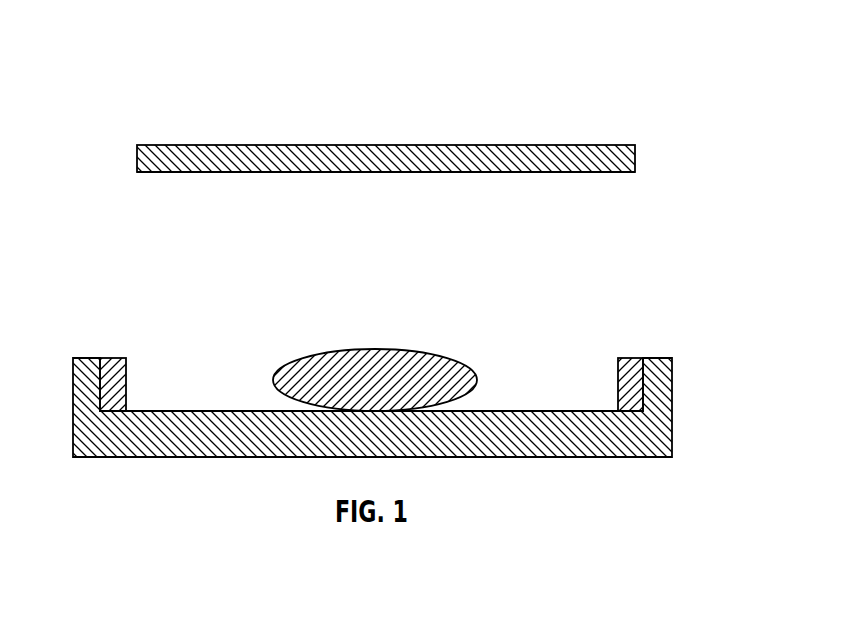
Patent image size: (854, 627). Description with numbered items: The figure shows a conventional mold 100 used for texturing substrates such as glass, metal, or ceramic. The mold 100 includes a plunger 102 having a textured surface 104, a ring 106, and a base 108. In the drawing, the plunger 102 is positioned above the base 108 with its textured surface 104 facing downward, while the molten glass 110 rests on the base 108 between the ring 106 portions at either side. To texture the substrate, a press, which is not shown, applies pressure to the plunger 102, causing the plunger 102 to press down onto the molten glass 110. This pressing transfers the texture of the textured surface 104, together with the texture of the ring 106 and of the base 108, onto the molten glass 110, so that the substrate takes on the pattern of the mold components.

The mold 100 is at (120, 66).
The plunger 102 is at (515, 145).
The textured surface 104 is at (623, 172).
The ring 106 is at (630, 358).
The base 108 is at (672, 410).
The molten glass 110 is at (375, 350).